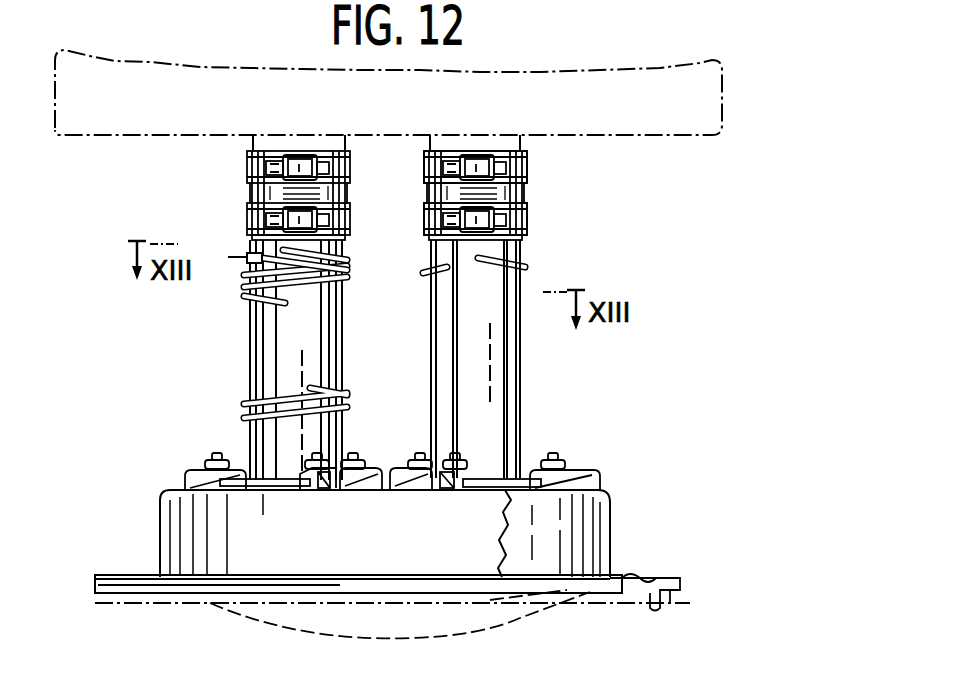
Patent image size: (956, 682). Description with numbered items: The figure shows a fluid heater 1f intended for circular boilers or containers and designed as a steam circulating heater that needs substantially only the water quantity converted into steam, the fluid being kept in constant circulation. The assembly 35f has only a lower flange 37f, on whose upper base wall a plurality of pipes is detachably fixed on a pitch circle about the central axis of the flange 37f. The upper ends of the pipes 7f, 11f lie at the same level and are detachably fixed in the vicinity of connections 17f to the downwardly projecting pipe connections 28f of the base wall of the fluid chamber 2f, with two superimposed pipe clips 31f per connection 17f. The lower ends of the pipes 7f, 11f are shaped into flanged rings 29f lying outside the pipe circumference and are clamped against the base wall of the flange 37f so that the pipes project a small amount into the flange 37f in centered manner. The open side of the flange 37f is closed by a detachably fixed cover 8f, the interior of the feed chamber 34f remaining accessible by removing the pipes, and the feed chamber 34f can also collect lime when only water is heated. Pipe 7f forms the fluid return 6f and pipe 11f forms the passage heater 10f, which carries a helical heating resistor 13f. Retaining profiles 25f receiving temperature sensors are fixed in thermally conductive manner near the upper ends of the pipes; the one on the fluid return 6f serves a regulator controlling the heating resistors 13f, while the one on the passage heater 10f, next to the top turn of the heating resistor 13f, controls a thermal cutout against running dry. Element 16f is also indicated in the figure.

The fluid heater 1f is at (667, 416).
The fluid chamber 2f is at (673, 125).
The fluid return 6f is at (419, 381).
The pipe 7f is at (500, 366).
The cover 8f is at (530, 615).
The passage heater 10f is at (232, 380).
The pipe 11f is at (325, 355).
The heating resistor 13f is at (312, 290).
The bracket 16f is at (536, 440).
The connection 17f is at (560, 185).
The retaining profile 25f is at (490, 265).
The pipe connection 28f is at (462, 146).
The flanged ring 29f is at (478, 470).
The pipe clip 31f is at (528, 215).
The feed chamber 34f is at (590, 522).
The assembly 35f is at (172, 380).
The lower flange 37f is at (180, 523).